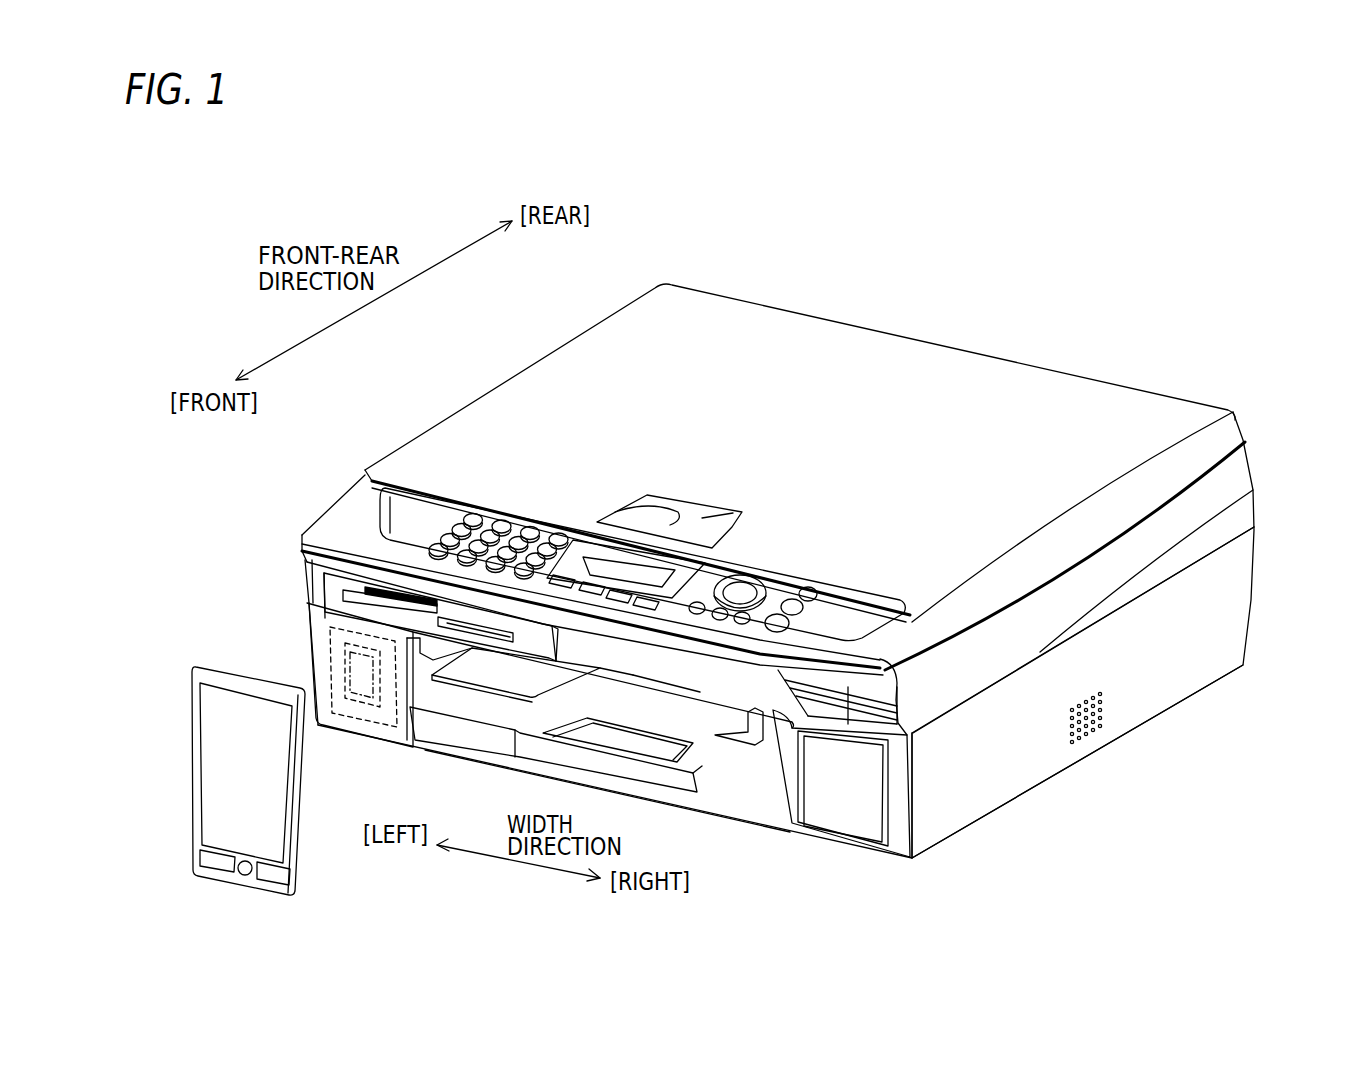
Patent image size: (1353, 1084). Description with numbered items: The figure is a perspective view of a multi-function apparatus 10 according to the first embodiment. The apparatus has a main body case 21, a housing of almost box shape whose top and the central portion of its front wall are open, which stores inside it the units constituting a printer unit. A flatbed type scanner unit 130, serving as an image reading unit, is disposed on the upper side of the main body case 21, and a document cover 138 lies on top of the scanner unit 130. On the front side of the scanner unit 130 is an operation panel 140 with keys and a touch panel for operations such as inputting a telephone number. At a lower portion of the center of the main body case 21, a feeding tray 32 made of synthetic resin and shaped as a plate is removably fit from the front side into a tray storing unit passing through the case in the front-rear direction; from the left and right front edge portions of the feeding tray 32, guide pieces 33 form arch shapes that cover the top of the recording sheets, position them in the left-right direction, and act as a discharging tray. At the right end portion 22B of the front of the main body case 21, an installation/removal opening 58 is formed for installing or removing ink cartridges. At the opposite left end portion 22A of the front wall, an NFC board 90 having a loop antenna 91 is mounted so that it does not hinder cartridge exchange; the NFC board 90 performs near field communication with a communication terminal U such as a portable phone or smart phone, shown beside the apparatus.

The multi-function apparatus 10 is at (636, 277).
The document cover 138 is at (880, 350).
The scanner unit 130 is at (1108, 560).
The operation panel 140 is at (407, 527).
The main body case 21 is at (1142, 705).
The left end portion 22A is at (323, 620).
The right end portion 22B is at (860, 737).
The NFC board 90 is at (322, 650).
The loop antenna 91 is at (362, 702).
The feeding tray 32 is at (512, 712).
The guide pieces 33 is at (477, 668).
The installation/removal opening 58 is at (802, 780).
The communication terminal U is at (290, 800).